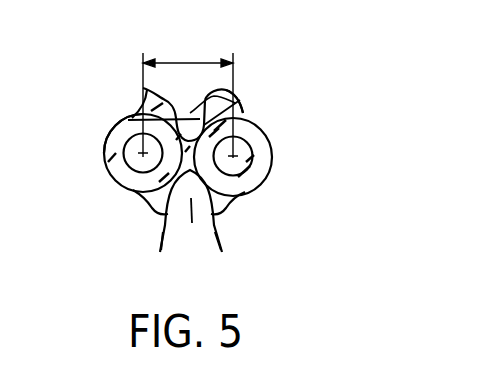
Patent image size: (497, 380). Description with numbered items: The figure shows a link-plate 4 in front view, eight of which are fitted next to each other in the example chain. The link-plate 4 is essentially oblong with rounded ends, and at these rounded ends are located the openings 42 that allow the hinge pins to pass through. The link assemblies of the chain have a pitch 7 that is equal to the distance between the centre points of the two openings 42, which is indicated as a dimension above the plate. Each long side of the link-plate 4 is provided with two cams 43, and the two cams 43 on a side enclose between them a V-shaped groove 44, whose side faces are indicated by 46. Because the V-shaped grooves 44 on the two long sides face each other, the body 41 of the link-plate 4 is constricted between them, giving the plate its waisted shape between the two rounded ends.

The link-plate 4 is at (278, 138).
The pitch 7 is at (188, 95).
The body 41 is at (127, 121).
The openings 42 is at (124, 177).
The cams 43 is at (147, 90).
The V-shaped groove 44 is at (197, 112).
The side faces 46 is at (240, 94).